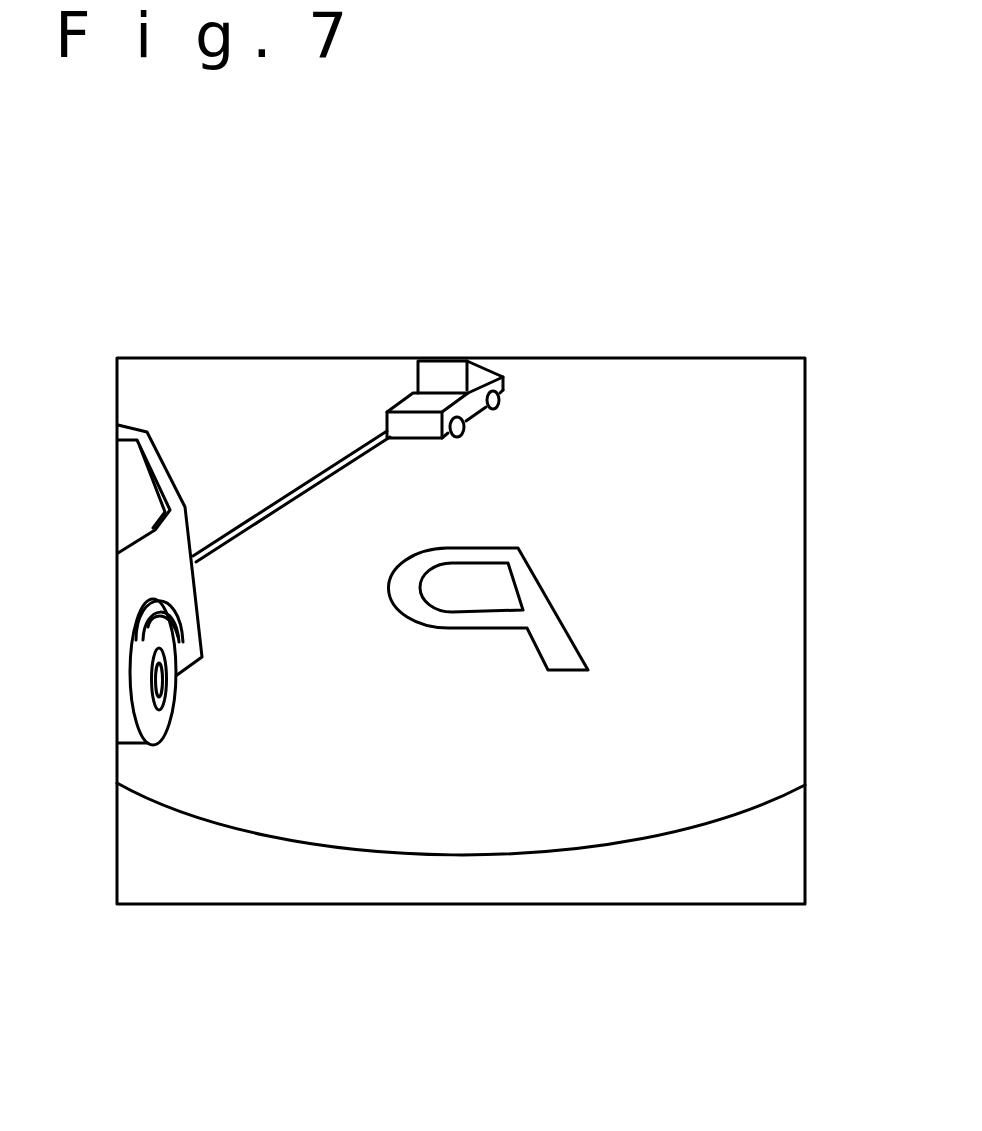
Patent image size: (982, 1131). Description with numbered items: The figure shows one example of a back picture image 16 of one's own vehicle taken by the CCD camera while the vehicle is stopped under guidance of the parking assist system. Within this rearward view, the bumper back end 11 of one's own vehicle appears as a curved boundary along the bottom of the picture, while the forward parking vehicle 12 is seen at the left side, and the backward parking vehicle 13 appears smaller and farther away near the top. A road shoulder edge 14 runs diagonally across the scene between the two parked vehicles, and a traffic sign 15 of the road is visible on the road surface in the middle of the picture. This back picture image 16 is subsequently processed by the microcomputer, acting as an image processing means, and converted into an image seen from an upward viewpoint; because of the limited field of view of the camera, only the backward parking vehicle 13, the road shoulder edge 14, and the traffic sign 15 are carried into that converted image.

The bumper back end 11 is at (692, 827).
The forward parking vehicle 12 is at (125, 575).
The backward parking vehicle 13 is at (430, 382).
The road shoulder edge 14 is at (302, 482).
The traffic sign 15 is at (538, 590).
The back picture image 16 is at (757, 340).